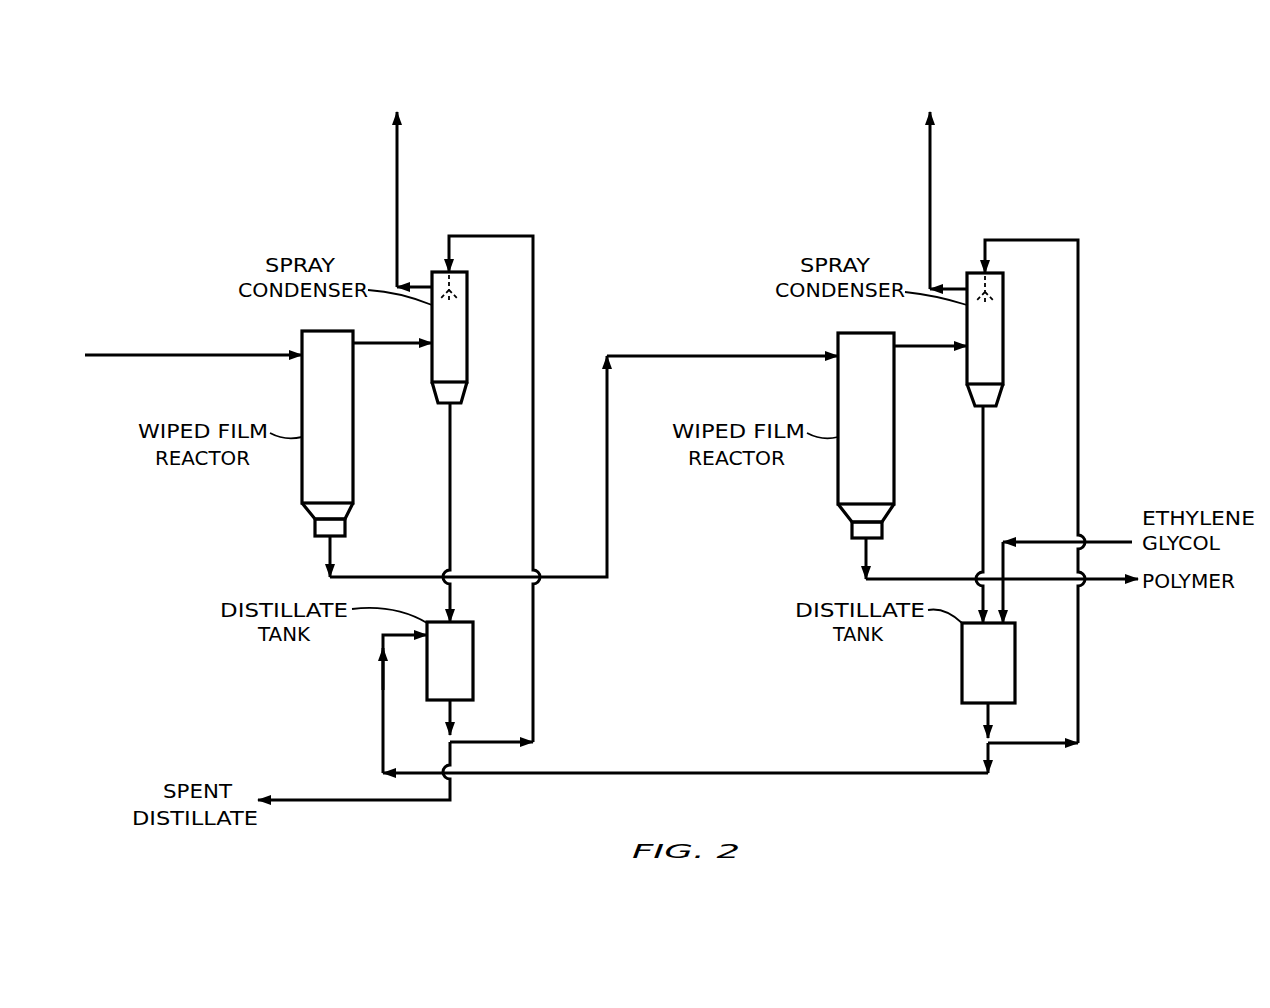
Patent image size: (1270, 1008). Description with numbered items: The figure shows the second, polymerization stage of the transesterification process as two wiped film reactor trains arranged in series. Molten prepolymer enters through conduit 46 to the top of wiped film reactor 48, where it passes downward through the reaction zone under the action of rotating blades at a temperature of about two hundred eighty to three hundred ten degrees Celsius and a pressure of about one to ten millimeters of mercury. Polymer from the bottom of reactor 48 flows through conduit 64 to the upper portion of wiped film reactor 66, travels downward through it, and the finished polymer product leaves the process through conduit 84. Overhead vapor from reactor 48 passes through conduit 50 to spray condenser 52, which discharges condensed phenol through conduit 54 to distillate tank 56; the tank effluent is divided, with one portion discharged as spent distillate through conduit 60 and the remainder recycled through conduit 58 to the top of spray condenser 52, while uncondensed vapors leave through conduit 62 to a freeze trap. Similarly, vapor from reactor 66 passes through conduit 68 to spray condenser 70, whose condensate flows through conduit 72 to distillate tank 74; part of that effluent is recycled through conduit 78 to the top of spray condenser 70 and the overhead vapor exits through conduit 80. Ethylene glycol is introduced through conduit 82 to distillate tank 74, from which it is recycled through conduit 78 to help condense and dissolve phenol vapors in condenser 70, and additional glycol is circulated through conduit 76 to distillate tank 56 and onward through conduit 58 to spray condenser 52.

The conduit 46 is at (228, 352).
The wiped film reactor 48 is at (353, 473).
The conduit 50 is at (375, 343).
The spray condenser 52 is at (467, 360).
The conduit 54 is at (450, 470).
The distillate tank 56 is at (473, 650).
The recycle conduit 58 is at (533, 618).
The conduit 60 is at (444, 708).
The conduit 62 is at (397, 163).
The conduit 64 is at (370, 577).
The wiped film reactor 66 is at (894, 478).
The conduit 68 is at (912, 346).
The spray condenser 70 is at (1003, 362).
The conduit 72 is at (985, 470).
The distillate tank 74 is at (962, 684).
The conduit 76 is at (897, 773).
The conduit 78 is at (1043, 743).
The conduit 80 is at (930, 163).
The conduit 82 is at (1058, 542).
The conduit 84 is at (1055, 580).